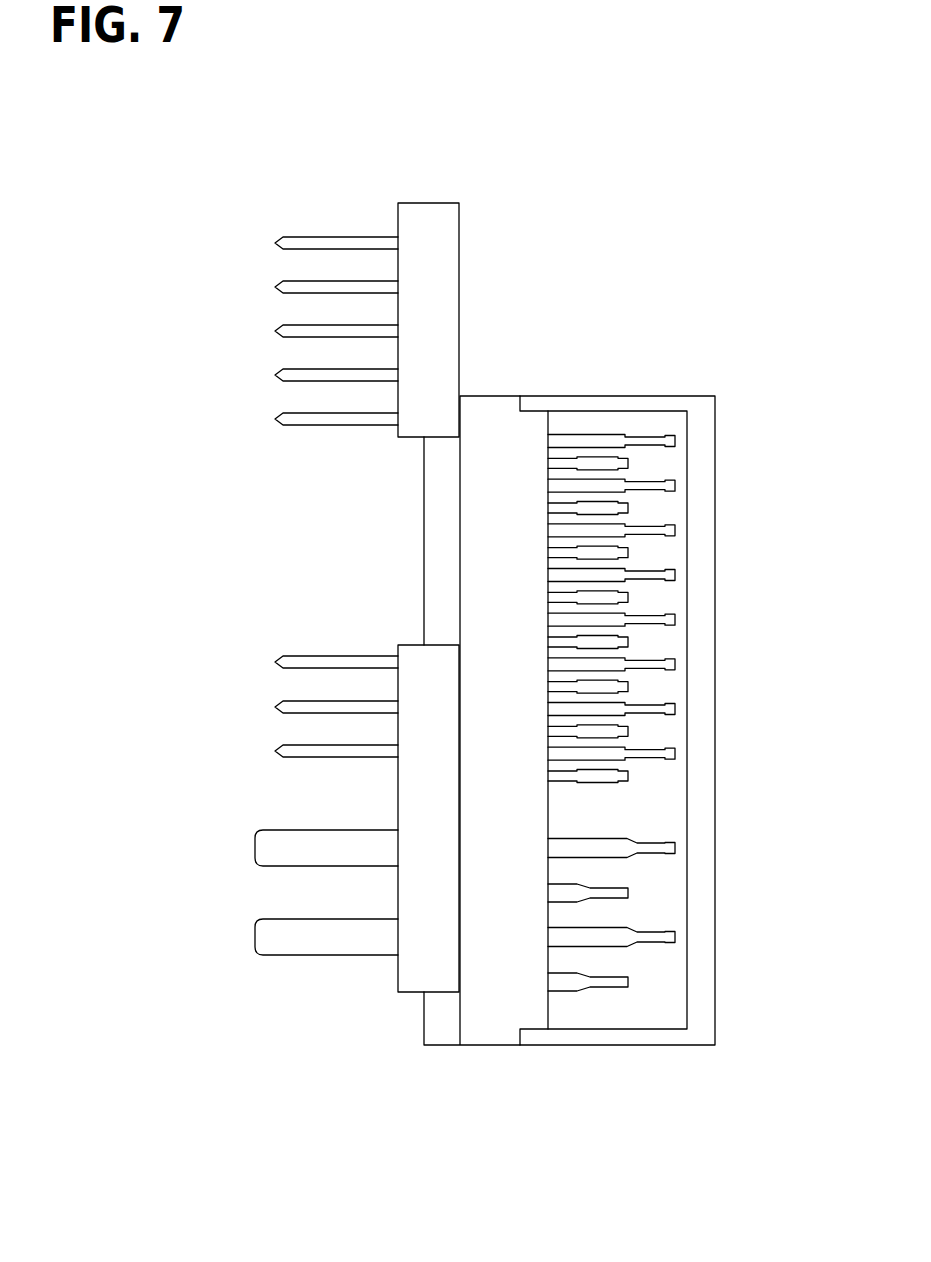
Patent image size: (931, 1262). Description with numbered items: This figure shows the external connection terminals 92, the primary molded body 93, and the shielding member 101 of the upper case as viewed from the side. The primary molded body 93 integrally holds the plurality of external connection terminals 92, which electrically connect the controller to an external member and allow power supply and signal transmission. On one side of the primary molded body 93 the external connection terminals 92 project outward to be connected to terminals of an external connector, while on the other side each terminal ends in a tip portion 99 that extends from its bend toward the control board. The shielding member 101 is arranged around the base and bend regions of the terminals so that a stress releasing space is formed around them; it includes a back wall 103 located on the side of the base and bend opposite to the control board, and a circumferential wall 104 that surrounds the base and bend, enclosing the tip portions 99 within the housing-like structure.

The external connection terminal 92 is at (291, 598).
The primary molded body 93 is at (495, 433).
The tip portion 99 is at (678, 716).
The shielding member 101 is at (670, 703).
The back wall 103 is at (657, 430).
The circumferential wall 104 is at (624, 402).